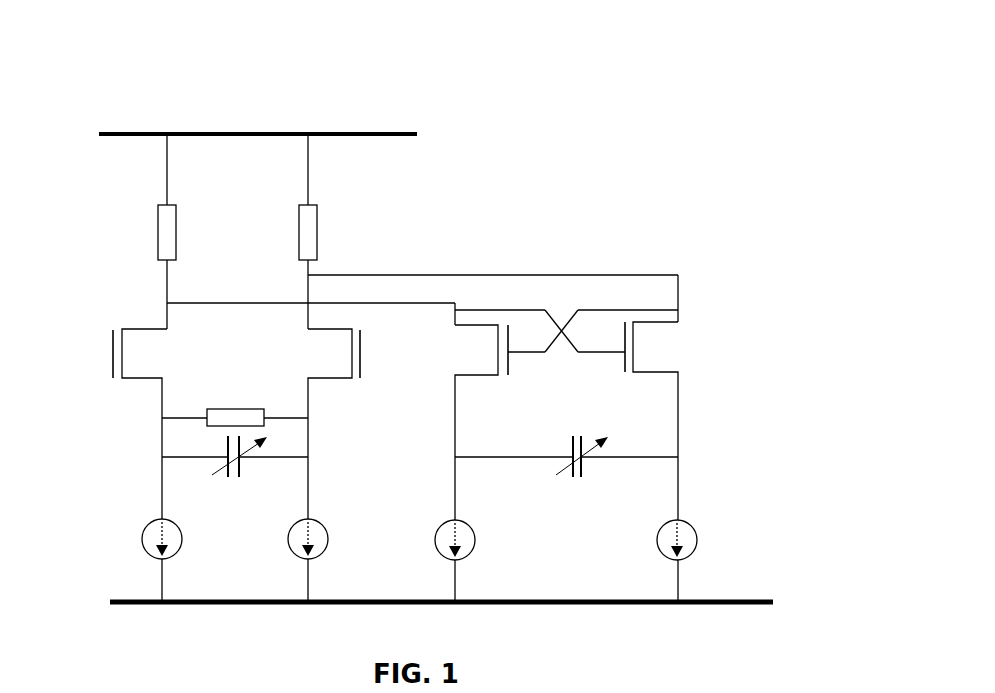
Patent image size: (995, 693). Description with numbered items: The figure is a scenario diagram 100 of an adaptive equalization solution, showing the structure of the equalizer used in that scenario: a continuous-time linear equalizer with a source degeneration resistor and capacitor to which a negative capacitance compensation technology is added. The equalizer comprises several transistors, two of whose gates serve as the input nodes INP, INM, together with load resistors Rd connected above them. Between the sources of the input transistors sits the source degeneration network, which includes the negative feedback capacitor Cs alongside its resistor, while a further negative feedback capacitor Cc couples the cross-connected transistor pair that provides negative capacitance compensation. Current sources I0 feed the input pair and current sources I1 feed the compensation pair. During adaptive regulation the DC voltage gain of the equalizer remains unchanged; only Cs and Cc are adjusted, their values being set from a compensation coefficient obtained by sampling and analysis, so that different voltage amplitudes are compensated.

The scenario diagram 100 is at (629, 109).
The load resistor Rd is at (232, 231).
The positive input transistor INP is at (113, 353).
The negative input transistor INM is at (405, 353).
The negative feedback capacitor Cs is at (235, 467).
The negative feedback capacitor Cc is at (566, 469).
The input stage current source I0 is at (232, 560).
The cross-coupled stage current source I1 is at (566, 561).